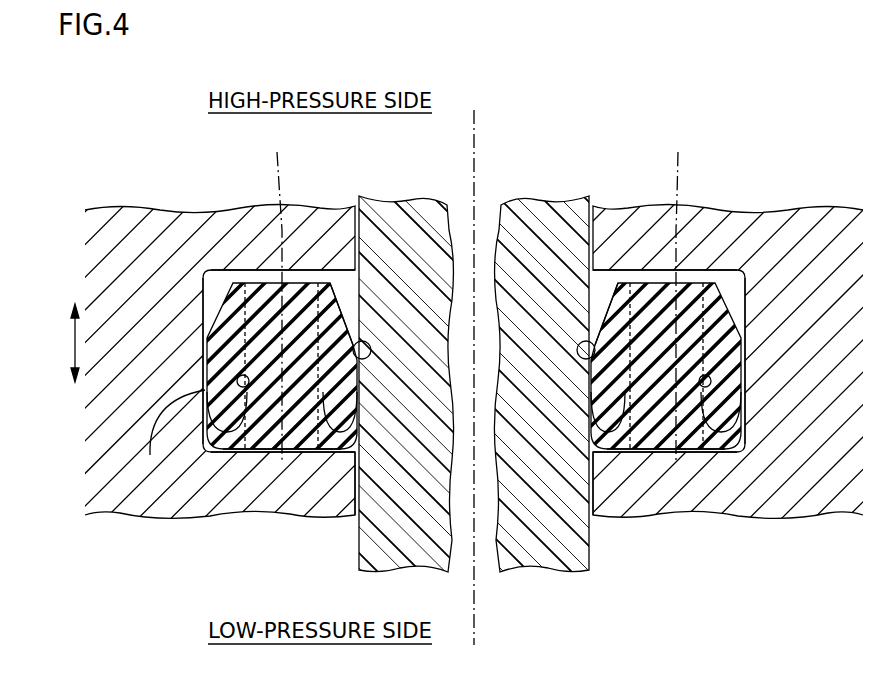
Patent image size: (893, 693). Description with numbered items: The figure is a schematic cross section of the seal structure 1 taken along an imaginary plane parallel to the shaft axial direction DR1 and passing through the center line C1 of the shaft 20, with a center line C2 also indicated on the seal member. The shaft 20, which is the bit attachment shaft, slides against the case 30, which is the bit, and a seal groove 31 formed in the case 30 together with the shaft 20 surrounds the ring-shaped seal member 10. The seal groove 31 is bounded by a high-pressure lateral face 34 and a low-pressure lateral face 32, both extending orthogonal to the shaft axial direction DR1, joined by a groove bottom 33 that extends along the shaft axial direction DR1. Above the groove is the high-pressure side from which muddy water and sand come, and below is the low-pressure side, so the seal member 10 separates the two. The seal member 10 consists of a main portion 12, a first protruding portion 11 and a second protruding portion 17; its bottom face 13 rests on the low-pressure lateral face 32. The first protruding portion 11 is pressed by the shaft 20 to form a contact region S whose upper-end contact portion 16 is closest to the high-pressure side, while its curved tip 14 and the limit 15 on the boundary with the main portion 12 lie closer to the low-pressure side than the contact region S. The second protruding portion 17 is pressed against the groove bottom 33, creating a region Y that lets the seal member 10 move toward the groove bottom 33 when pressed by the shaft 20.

The seal structure 1 is at (553, 88).
The seal member 10 is at (236, 300).
The first protruding portion 11 is at (348, 460).
The main portion 12 is at (282, 455).
The bottom face 13 is at (312, 340).
The tip 14 is at (312, 432).
The limit 15 is at (320, 395).
The upper-end contact portion 16 is at (357, 335).
The second protruding portion 17 is at (215, 445).
The shaft 20 is at (425, 198).
The case 30 is at (332, 498).
The seal groove 31 is at (232, 453).
The low-pressure lateral face 32 is at (268, 455).
The groove bottom 33 is at (200, 298).
The high-pressure lateral face 34 is at (333, 270).
The contact region S is at (369, 343).
The center line C1 is at (474, 110).
The seal center line C2 is at (475, 296).
The shaft axial direction DR1 is at (70, 345).
The region Y is at (155, 455).